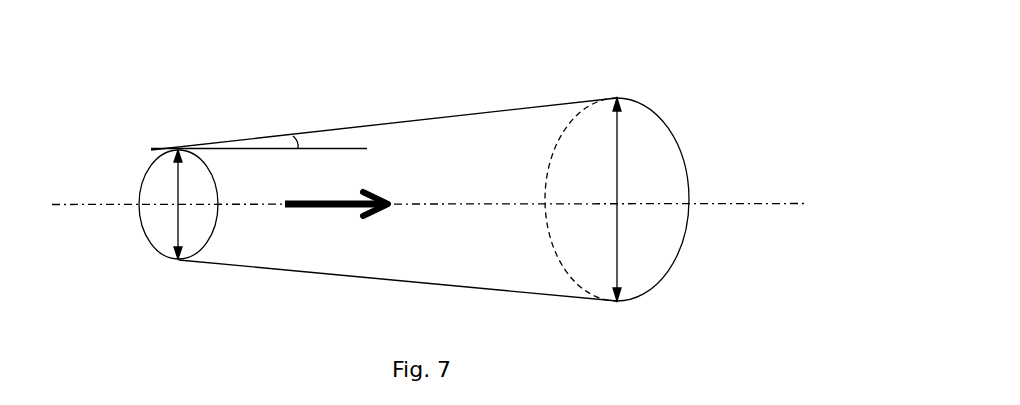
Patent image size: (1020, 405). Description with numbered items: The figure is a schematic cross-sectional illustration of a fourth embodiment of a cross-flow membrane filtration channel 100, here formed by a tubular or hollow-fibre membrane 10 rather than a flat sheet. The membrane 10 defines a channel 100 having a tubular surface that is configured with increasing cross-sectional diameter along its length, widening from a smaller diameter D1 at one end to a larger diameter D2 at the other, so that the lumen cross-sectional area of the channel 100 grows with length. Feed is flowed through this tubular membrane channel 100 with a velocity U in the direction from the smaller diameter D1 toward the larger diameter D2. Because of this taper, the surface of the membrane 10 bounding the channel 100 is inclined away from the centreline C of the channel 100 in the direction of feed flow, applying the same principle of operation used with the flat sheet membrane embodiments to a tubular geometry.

The membrane 10 is at (480, 113).
The channel 100 is at (414, 166).
The centreline C is at (90, 206).
The smaller diameter D1 is at (178, 183).
The larger diameter D2 is at (617, 167).
The velocity U is at (336, 218).